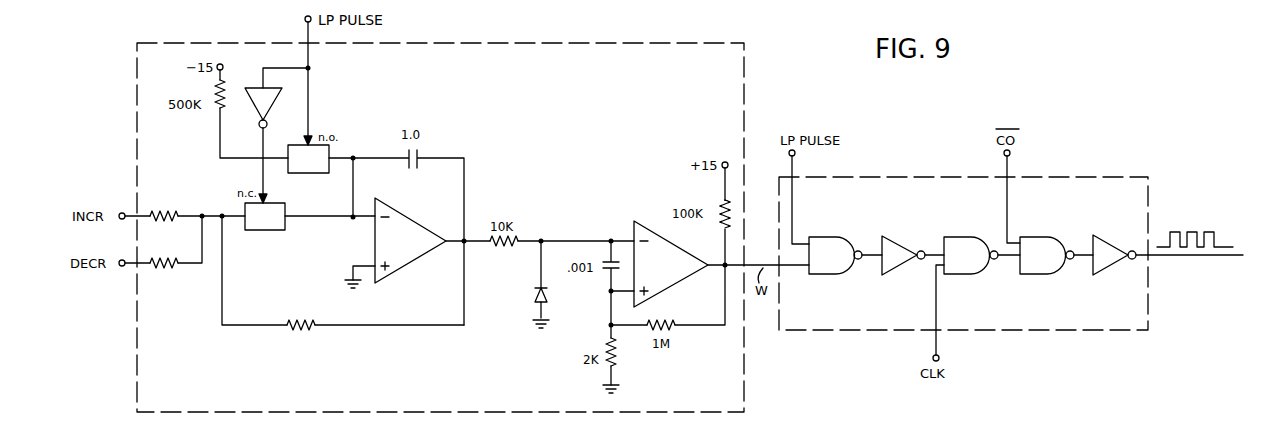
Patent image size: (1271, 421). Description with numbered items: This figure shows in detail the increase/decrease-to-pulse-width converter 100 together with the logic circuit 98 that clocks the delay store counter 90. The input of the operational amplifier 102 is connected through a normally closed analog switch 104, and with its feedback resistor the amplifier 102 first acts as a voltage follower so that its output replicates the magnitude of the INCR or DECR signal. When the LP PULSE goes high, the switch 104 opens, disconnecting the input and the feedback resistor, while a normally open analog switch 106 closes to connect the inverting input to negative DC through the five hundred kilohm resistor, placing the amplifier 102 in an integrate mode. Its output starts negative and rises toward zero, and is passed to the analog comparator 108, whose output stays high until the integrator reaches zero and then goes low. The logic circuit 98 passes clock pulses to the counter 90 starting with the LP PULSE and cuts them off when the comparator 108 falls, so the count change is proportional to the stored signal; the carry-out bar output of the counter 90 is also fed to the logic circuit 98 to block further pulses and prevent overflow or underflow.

The increase/decrease-to-pulse-width converter 100 is at (440, 227).
The operational amplifier 102 is at (408, 262).
The analog switch 104 is at (265, 230).
The analog switch 106 is at (308, 173).
The analog comparator 108 is at (680, 287).
The logic circuit 98 is at (963, 253).
The delay store counter 90 is at (1189, 277).